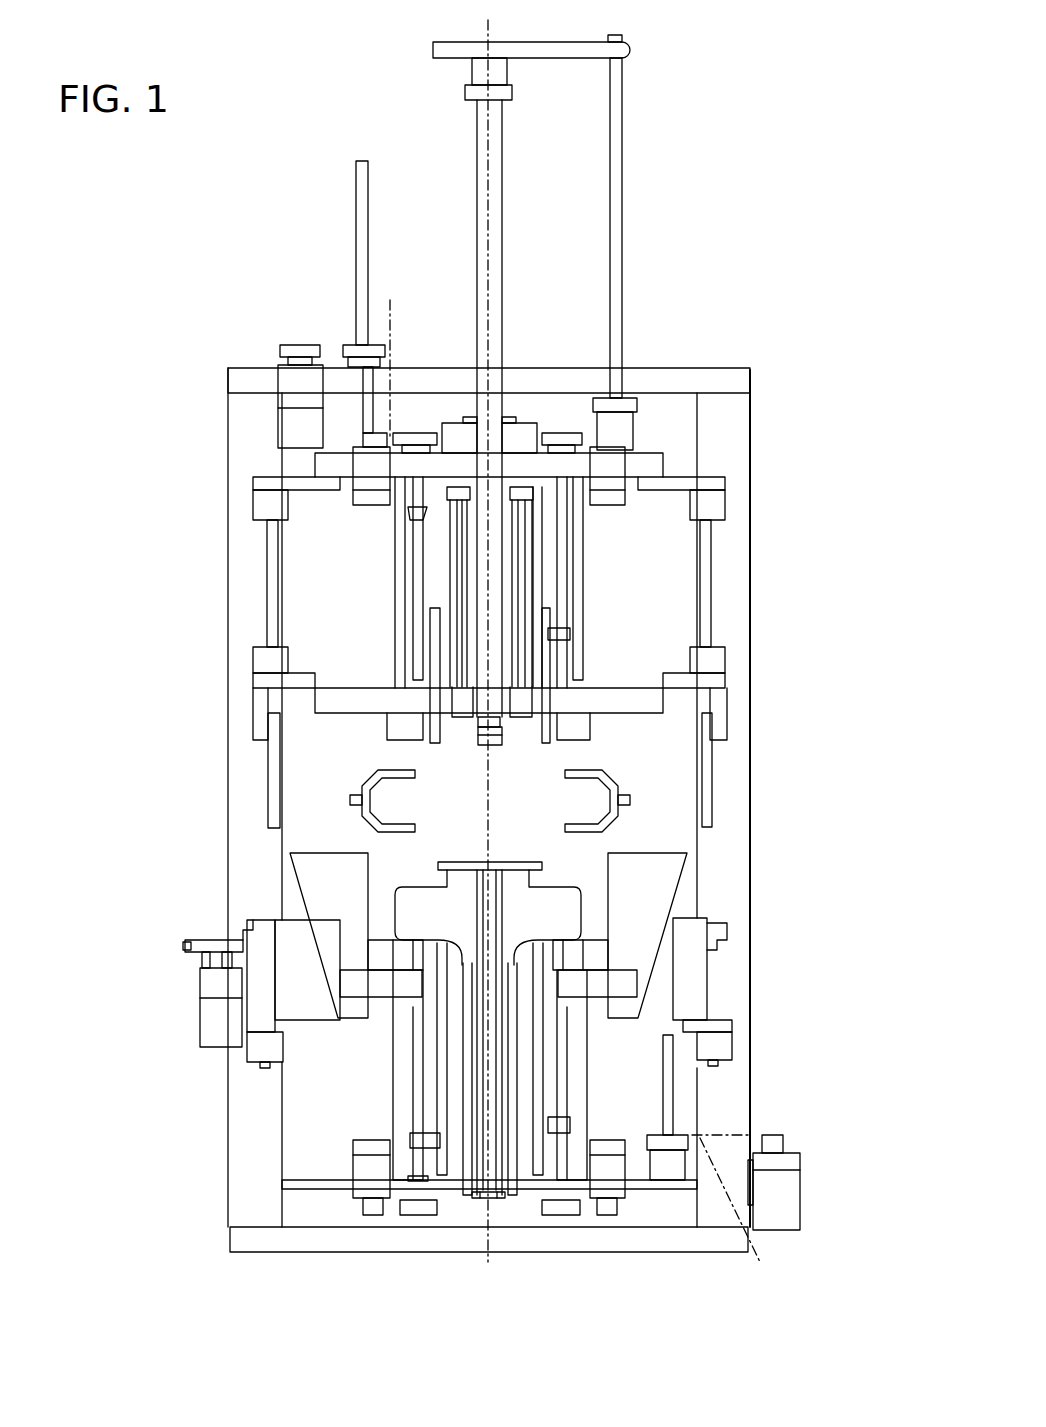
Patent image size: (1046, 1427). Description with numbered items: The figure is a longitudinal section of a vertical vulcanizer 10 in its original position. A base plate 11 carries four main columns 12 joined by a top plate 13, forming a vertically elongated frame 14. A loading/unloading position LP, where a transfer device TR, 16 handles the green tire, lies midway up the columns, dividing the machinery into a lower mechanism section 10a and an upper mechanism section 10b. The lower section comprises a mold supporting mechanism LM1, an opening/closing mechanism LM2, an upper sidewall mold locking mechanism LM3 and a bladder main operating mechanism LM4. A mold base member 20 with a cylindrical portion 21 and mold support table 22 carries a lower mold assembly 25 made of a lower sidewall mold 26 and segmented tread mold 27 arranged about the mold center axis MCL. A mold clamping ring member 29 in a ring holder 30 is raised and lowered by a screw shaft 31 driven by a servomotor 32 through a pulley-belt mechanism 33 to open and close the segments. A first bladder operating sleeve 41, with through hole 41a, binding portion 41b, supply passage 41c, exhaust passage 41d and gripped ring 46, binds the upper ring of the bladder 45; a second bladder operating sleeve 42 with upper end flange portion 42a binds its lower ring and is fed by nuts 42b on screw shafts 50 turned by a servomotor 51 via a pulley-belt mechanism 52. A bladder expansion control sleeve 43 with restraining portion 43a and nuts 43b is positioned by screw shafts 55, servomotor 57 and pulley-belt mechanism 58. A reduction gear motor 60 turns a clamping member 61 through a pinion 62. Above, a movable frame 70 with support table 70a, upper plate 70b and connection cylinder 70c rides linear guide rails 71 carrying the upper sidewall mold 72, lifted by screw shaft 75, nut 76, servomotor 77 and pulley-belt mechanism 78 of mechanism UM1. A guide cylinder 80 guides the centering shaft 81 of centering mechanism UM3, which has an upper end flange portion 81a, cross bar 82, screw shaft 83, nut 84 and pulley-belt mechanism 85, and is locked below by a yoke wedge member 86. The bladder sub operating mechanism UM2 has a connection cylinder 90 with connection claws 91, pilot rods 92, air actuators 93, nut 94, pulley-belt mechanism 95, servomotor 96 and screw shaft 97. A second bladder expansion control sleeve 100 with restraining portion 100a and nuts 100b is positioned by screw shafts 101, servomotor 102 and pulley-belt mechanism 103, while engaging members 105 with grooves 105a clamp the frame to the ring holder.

The vertical vulcanizer 10 is at (140, 410).
The lower mechanism section 10a is at (790, 918).
The upper mechanism section 10b is at (790, 630).
The base plate 11 is at (700, 1236).
The main columns 12 is at (723, 853).
The top plate 13 is at (718, 378).
The frame 14 is at (762, 738).
The transfer device 16 is at (377, 773).
The mold base member 20 is at (300, 1198).
The cylindrical portion 21 is at (577, 1083).
The mold support table 22 is at (378, 999).
The lower mold assembly 25 is at (678, 947).
The lower sidewall mold 26 is at (395, 955).
The segmented tread mold 27 is at (313, 907).
The mold clamping ring member 29 is at (293, 997).
The ring holder 30 is at (717, 1013).
The screw shaft 31 is at (667, 1113).
The servomotor 32 is at (785, 1190).
The pulley-belt mechanism 33 is at (744, 1213).
The first bladder operating sleeve 41 is at (508, 923).
The through hole 41a is at (493, 1200).
The binding portion 41b is at (440, 860).
The supply passage 41c is at (468, 1062).
The exhaust passage 41d is at (530, 1013).
The second bladder operating sleeve 42 is at (413, 1123).
The upper end flange portion 42a is at (437, 923).
The nuts 42b is at (410, 1140).
The bladder expansion control sleeve 43 is at (437, 1077).
The bladder side surface restraining portion 43a is at (547, 920).
The nuts 43b is at (570, 1125).
The bladder 45 is at (587, 893).
The gripped ring 46 is at (505, 862).
The screw shafts 50 is at (367, 1158).
The servomotor 51 is at (315, 1185).
The pulley-belt mechanism 52 is at (392, 1215).
The screw shafts 55 is at (557, 1050).
The servomotor 57 is at (610, 1183).
The pulley-belt mechanism 58 is at (585, 1208).
The reduction gear motor 60 is at (205, 993).
The clamping member 61 is at (240, 917).
The pinion 62 is at (197, 940).
The movable frame 70 is at (205, 492).
The support table 70a is at (327, 702).
The upper plate 70b is at (320, 465).
The connection cylinder 70c is at (398, 610).
The linear guide rails 71 is at (270, 540).
The upper sidewall mold 72 is at (580, 727).
The screw shaft 75 is at (362, 240).
The nut 76 is at (352, 345).
The servomotor 77 is at (298, 383).
The pulley-belt mechanism 78 is at (330, 345).
The guide cylinder 80 is at (518, 440).
The centering shaft 81 is at (503, 207).
The upper end flange portion 81a is at (470, 92).
The cross bar 82 is at (566, 60).
The screw shaft 83 is at (622, 216).
The nut 84 is at (617, 405).
The pulley-belt mechanism 85 is at (600, 395).
The yoke wedge member 86 is at (472, 1197).
The connection cylinder 90 is at (528, 602).
The connection claws 91 is at (520, 703).
The pilot rods 92 is at (467, 572).
The air actuators 93 is at (517, 493).
The nut 94 is at (417, 512).
The pulley-belt mechanism 95 is at (394, 361).
The servomotor 96 is at (367, 482).
The screw shaft 97 is at (417, 633).
The bladder expansion control sleeve 100 is at (433, 663).
The bladder side surface restraining portion 100a is at (557, 740).
The nuts 100b is at (570, 630).
The screw shafts 101 is at (690, 507).
The servomotor 102 is at (607, 467).
The pulley-belt mechanism 103 is at (597, 420).
The engaging members 105 is at (258, 688).
The grooves 105a is at (258, 733).
The loading/unloading position LP is at (328, 797).
The transfer TR is at (587, 787).
The mold center axis MCL is at (476, 262).
The supporting and opening/closing mechanism UM1 is at (732, 596).
The bladder sub operating mechanism UM2 is at (560, 565).
The centering mechanism UM3 is at (515, 390).
The mold supporting mechanism LM1 is at (605, 1095).
The opening/closing mechanism LM2 is at (700, 895).
The upper sidewall mold locking mechanism LM3 is at (170, 968).
The bladder main operating mechanism LM4 is at (528, 1215).